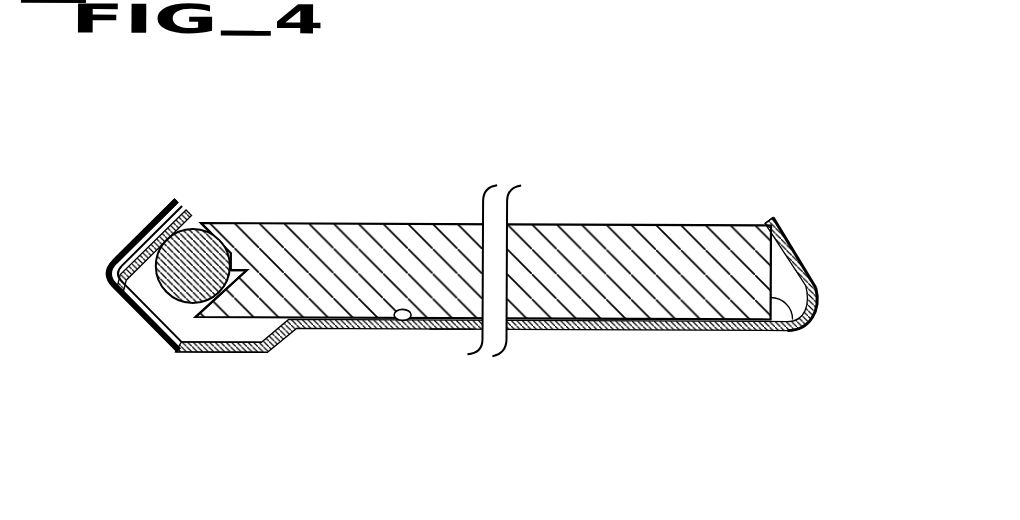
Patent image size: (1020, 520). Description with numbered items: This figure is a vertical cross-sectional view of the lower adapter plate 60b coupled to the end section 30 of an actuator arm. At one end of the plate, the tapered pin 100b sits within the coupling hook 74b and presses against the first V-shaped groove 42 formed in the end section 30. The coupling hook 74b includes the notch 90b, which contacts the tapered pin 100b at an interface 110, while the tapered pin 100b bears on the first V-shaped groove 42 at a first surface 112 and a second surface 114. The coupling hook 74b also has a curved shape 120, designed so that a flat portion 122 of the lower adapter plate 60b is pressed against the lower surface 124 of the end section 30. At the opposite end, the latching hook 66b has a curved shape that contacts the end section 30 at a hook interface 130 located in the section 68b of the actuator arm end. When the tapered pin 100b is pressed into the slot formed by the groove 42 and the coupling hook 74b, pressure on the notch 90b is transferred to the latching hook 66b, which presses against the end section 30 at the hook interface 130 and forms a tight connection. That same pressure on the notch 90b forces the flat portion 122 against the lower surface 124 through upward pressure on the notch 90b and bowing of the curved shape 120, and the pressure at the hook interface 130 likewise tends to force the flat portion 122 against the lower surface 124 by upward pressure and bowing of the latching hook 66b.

The end section 30 is at (484, 226).
The first V-shaped groove 42 is at (196, 229).
The lower adapter plate 60b is at (530, 299).
The latching hook 66b is at (815, 275).
The section of the actuator arm end 68b is at (793, 330).
The coupling hook 74b is at (132, 312).
The notch 90b is at (128, 232).
The tapered pin 100b is at (122, 277).
The interface 110 is at (124, 242).
The first surface 112 is at (228, 292).
The second surface 114 is at (236, 223).
The curved shape 120 is at (260, 357).
The flat portion 122 is at (452, 330).
The lower surface 124 is at (393, 330).
The hook interface 130 is at (764, 220).